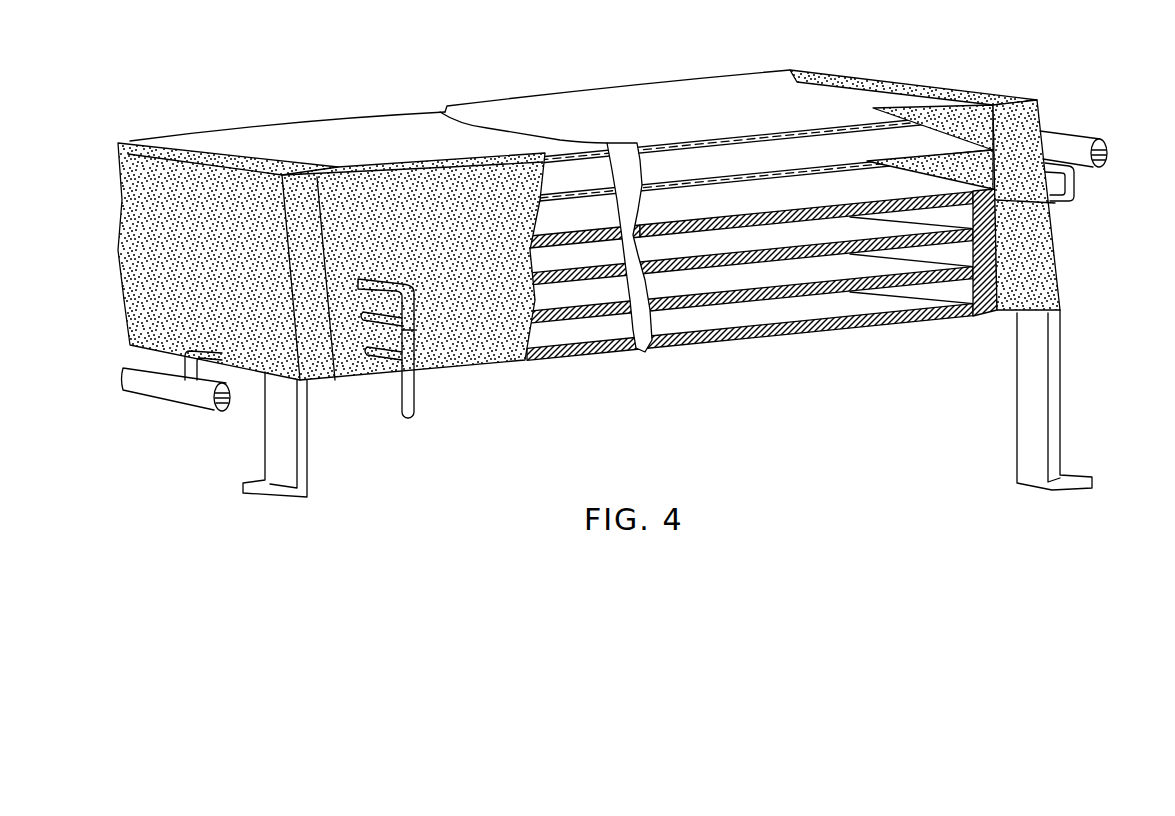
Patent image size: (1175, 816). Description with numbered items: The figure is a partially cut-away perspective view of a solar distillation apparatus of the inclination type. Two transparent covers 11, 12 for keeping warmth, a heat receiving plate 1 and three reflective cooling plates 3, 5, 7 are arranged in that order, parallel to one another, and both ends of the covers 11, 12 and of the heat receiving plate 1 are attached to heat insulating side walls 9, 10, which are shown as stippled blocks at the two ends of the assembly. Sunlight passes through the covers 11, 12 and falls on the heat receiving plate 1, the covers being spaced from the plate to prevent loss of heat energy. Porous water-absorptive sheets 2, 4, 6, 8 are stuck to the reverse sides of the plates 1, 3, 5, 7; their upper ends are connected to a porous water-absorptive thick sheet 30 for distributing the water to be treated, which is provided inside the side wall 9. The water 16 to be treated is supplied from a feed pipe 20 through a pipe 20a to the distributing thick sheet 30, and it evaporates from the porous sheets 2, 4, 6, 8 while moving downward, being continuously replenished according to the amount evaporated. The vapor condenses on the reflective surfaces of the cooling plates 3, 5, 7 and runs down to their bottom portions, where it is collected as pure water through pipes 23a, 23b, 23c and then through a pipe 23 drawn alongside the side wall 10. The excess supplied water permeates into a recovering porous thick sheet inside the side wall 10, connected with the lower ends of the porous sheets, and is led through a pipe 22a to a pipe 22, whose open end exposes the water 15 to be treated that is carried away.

The heat receiving plate 1 is at (580, 237).
The porous water-absorptive sheet 2 is at (790, 213).
The reflective cooling plate 3 is at (602, 250).
The porous water-absorptive sheet 4 is at (840, 227).
The reflective cooling plate 5 is at (670, 283).
The porous water-absorptive sheet 6 is at (868, 287).
The reflective cooling plate 7 is at (722, 315).
The porous water-absorptive sheet 8 is at (912, 320).
The heat insulating side wall 9 is at (1030, 100).
The heat insulating side wall 10 is at (155, 165).
The transparent cover 11 is at (638, 112).
The transparent cover 12 is at (787, 152).
The water to be treated 15 is at (225, 405).
The water to be treated 16 is at (1108, 158).
The feed pipe 20 is at (1068, 140).
The pipe 20a is at (1073, 197).
The pipe 22 is at (152, 388).
The pipe 22a is at (205, 388).
The pipe 23 is at (417, 400).
The pipe 23a is at (349, 383).
The pipe 23b is at (382, 387).
The pipe 23c is at (398, 395).
The porous water-absorptive thick sheet 30 is at (993, 307).